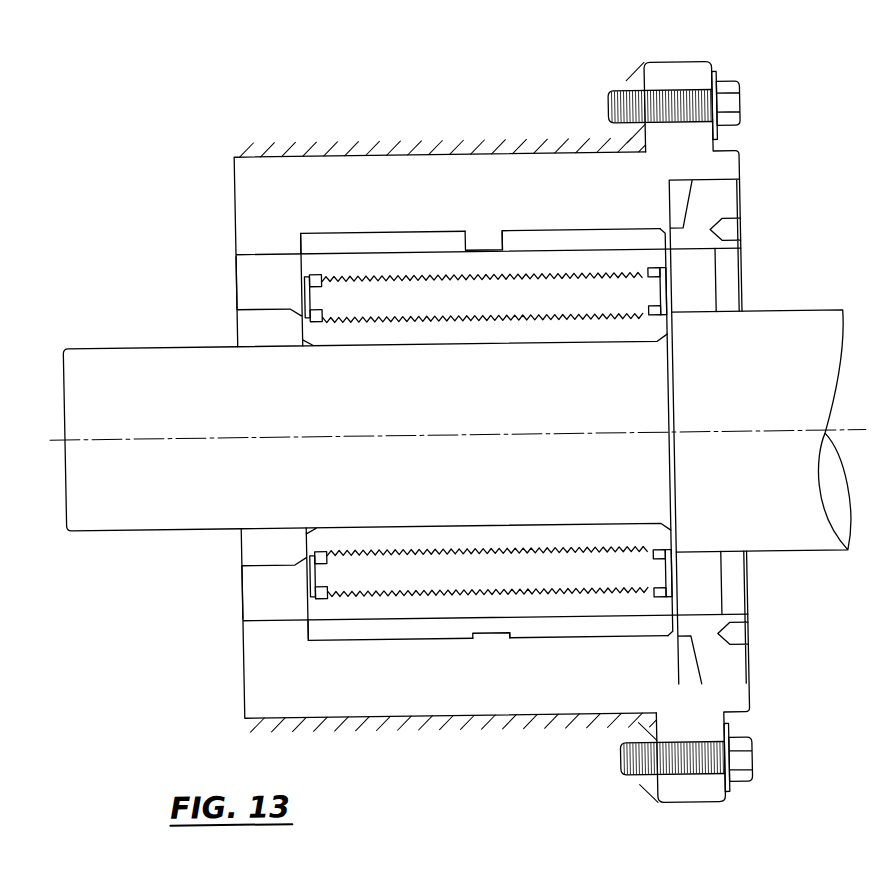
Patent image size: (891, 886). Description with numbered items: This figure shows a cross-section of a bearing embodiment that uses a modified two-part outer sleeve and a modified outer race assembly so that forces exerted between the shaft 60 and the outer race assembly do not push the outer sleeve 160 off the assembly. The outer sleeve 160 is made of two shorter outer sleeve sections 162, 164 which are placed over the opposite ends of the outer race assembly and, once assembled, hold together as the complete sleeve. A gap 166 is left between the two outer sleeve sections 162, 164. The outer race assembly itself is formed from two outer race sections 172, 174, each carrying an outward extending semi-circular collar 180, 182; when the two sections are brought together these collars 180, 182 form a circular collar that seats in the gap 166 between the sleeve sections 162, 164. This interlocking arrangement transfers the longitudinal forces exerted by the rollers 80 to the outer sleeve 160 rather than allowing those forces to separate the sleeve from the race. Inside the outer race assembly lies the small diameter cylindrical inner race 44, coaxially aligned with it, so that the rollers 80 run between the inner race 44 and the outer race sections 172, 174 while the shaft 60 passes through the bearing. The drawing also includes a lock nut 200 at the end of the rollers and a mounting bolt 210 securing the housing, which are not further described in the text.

The mounting bolt 210 is at (569, 121).
The outer sleeve 160 is at (466, 379).
The outer sleeve section 162 is at (312, 246).
The outer sleeve section 164 is at (622, 237).
The gap 166 is at (489, 227).
The outer race section 172 is at (389, 269).
The outer race section 174 is at (404, 620).
The semi-circular collar 180 is at (481, 245).
The semi-circular collar 182 is at (497, 634).
The lock nut 200 is at (308, 255).
The rollers 80 is at (514, 316).
The inner race 44 is at (560, 349).
The shaft 60 is at (777, 332).